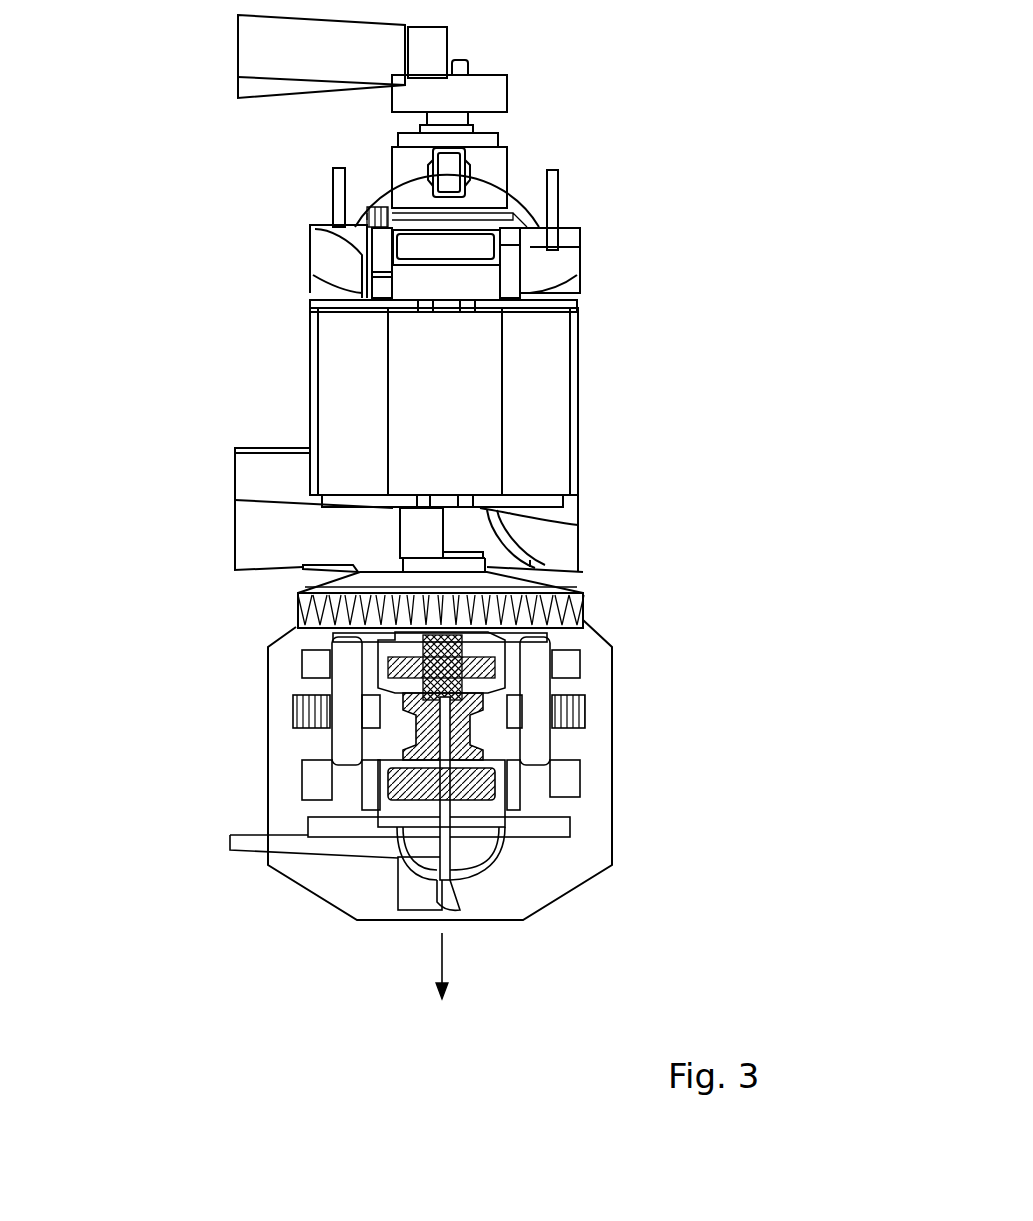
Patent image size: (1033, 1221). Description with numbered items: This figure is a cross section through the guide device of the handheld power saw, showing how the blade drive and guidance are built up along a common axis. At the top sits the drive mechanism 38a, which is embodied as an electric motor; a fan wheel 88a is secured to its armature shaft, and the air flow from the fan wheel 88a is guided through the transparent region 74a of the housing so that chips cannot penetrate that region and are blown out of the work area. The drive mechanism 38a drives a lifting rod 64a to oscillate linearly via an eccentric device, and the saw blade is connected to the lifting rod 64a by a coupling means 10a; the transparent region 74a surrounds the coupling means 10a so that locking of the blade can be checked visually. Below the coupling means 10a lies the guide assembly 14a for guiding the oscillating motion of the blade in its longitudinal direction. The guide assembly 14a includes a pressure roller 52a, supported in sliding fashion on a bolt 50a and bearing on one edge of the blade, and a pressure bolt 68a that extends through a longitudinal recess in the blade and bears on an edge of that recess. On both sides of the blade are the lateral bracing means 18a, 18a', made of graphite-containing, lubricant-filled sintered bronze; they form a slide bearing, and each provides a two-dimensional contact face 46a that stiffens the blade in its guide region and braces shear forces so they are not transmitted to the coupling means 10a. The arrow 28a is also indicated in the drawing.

The drive mechanism 38a is at (513, 197).
The pressure roller 52a is at (337, 643).
The fan wheel 88a is at (583, 609).
The bolt 50a is at (502, 670).
The contact face 46a is at (487, 725).
The lateral bracing means 18a is at (230, 739).
The lateral bracing means 18a' is at (628, 773).
The pressure bolt 68a is at (312, 765).
The lifting rod 64a is at (498, 788).
The coupling means 10a is at (370, 785).
The guide assembly 14a is at (380, 793).
The transparent region 74a is at (576, 898).
The flow direction 28a is at (442, 977).